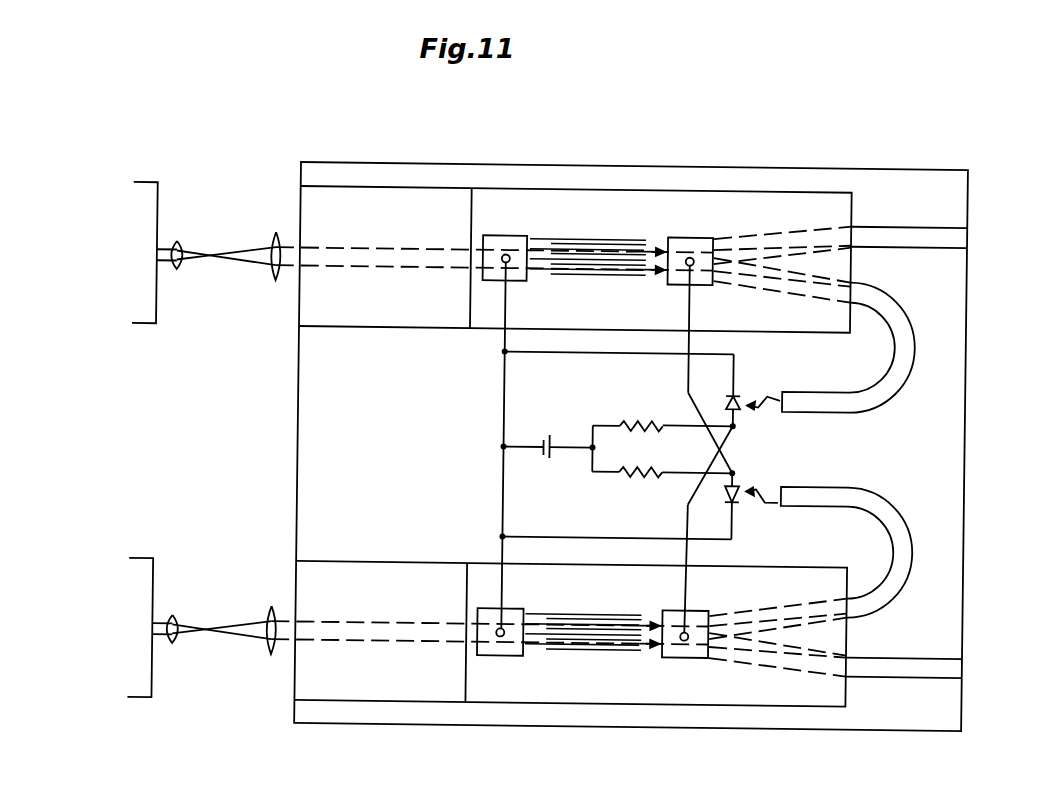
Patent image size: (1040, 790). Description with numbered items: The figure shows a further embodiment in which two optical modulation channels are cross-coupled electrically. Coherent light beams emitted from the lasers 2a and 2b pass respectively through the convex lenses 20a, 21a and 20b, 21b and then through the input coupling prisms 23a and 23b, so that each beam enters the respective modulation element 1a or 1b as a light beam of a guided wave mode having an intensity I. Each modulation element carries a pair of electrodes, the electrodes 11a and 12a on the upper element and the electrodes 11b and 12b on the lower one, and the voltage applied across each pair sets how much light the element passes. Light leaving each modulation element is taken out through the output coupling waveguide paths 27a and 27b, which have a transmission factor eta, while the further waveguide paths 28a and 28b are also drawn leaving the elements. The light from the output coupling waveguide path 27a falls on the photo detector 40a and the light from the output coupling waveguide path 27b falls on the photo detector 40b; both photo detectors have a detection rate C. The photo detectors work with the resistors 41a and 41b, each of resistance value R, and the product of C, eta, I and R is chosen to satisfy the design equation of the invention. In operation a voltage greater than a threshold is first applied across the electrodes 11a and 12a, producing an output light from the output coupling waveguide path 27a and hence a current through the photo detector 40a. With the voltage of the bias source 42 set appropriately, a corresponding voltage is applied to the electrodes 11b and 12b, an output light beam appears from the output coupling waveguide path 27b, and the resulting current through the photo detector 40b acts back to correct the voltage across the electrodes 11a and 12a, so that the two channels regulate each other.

The modulation element 1a is at (500, 185).
The modulation element 1b is at (506, 700).
The laser 2a is at (154, 324).
The laser 2b is at (140, 560).
The convex lens 20a is at (181, 244).
The convex lens 20b is at (181, 618).
The convex lens 21a is at (276, 235).
The convex lens 21b is at (273, 612).
The electrode 11a is at (507, 233).
The electrode 11b is at (511, 653).
The electrode 12a is at (689, 233).
The electrode 12b is at (689, 653).
The input coupling prism 23a is at (362, 192).
The input coupling prism 23b is at (414, 687).
The output coupling waveguide path 27a is at (892, 296).
The output coupling waveguide path 27b is at (890, 591).
The straight optical waveguide 28a is at (949, 224).
The straight optical waveguide 28b is at (908, 665).
The photo detector 40a is at (740, 388).
The photo detector 40b is at (741, 500).
The resistor 41a is at (638, 417).
The resistor 41b is at (644, 474).
The bias source 42 is at (546, 432).